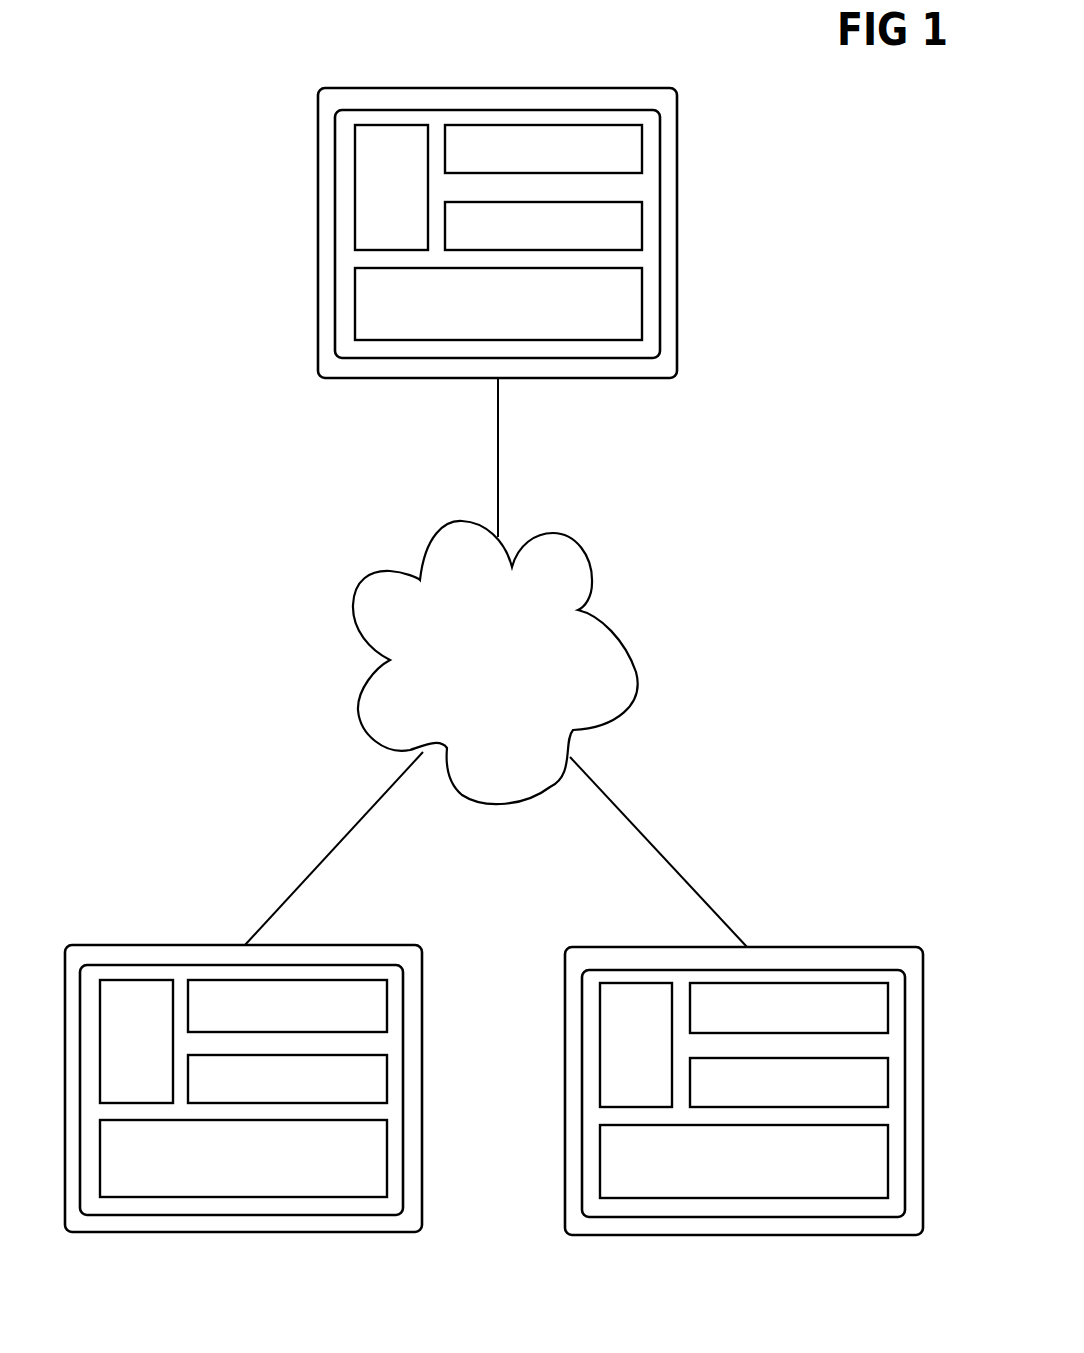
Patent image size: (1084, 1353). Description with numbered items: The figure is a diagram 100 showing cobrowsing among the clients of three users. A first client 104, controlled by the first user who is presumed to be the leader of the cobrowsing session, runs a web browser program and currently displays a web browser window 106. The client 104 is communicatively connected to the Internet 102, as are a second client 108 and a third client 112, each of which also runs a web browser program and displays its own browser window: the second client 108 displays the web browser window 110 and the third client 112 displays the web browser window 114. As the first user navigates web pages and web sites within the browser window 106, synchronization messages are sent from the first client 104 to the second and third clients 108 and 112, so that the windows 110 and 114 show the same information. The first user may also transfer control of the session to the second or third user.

The diagram 100 is at (785, 448).
The Internet 102 is at (352, 613).
The client 104 is at (450, 233).
The web browser window 106 is at (335, 322).
The second client 108 is at (243, 1122).
The web browser window 110 is at (240, 1212).
The third client 112 is at (744, 1128).
The web browser window 114 is at (707, 1220).